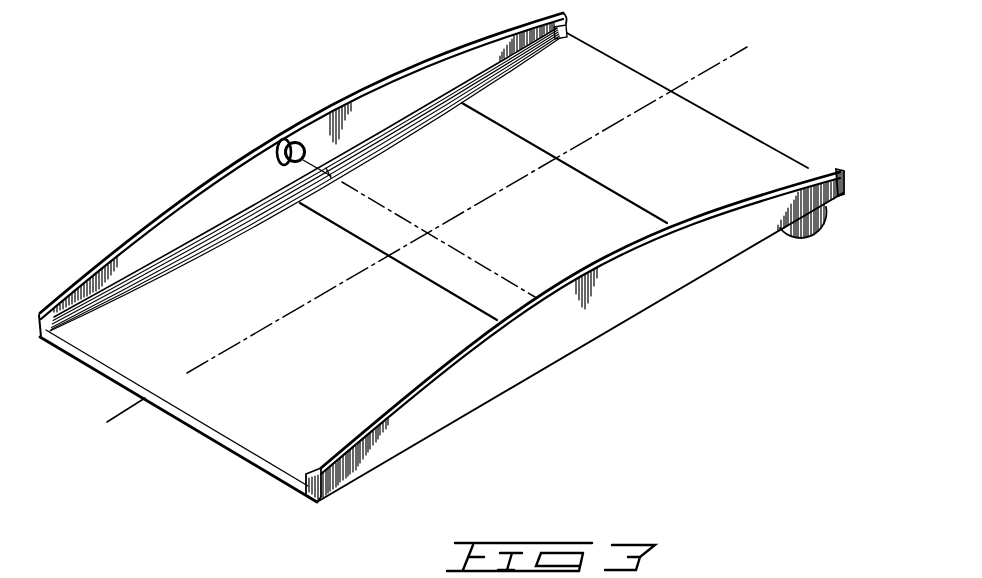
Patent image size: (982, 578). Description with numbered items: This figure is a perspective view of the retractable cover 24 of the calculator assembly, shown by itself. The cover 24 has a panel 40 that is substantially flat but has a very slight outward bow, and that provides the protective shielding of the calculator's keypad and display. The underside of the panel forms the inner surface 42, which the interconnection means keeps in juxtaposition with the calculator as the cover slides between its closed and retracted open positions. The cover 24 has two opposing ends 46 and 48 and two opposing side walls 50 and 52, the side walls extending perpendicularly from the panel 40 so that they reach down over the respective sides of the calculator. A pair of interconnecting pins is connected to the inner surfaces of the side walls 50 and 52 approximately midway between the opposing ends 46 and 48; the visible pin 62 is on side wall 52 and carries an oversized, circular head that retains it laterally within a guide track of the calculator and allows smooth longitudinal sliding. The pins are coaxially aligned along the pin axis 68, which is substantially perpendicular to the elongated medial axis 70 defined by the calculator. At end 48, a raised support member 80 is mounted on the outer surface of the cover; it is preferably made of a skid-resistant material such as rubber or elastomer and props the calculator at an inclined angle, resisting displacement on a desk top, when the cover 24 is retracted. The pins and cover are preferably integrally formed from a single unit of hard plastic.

The cover 24 is at (630, 330).
The panel 40 is at (717, 137).
The inner surface 42 is at (561, 235).
The end 46 is at (336, 500).
The end 48 is at (843, 191).
The side wall 50 is at (503, 373).
The side wall 52 is at (373, 100).
The interconnecting pin 62 is at (303, 140).
The pin axis 68 is at (413, 227).
The elongated medial axis 70 is at (121, 417).
The raised support member 80 is at (808, 232).